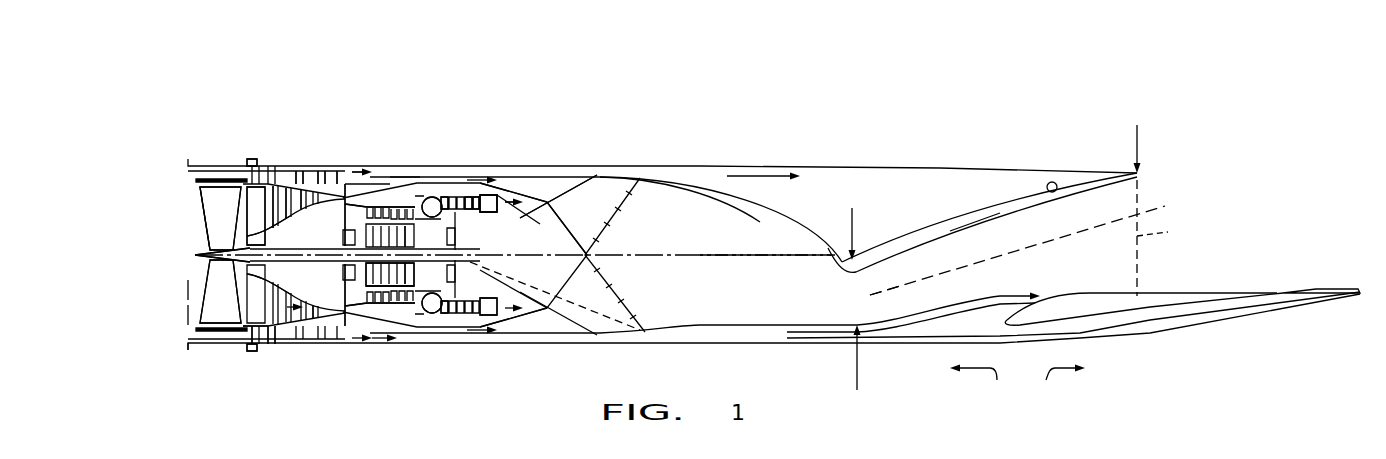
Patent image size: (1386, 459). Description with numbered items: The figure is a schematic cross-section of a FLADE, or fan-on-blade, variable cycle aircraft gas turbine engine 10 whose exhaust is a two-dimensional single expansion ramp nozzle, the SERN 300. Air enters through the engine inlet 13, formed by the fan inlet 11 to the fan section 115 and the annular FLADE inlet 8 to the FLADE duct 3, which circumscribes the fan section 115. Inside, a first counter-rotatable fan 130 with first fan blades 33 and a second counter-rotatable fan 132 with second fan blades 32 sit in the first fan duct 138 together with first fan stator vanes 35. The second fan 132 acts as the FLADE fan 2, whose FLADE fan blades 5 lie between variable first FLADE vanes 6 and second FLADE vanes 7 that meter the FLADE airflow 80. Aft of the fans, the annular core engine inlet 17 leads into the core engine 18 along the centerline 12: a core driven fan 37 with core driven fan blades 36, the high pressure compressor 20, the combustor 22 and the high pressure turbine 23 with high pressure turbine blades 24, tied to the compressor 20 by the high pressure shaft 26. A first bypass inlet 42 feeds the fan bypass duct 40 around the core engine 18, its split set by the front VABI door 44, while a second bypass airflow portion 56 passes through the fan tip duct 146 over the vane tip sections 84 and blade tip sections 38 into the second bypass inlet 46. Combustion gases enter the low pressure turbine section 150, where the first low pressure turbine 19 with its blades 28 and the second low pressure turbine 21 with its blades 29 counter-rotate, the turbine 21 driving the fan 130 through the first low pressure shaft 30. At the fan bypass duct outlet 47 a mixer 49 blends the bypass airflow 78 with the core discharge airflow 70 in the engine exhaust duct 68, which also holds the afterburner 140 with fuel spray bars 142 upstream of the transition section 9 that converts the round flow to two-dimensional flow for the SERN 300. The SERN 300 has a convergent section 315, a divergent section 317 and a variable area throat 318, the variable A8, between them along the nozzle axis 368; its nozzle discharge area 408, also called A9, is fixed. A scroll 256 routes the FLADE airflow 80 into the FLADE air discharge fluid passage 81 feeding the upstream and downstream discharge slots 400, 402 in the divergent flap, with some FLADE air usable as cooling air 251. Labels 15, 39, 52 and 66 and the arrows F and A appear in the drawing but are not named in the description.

The FLADE engine 10 is at (490, 90).
The FLADE fan 2 is at (267, 343).
The FLADE duct 3 is at (339, 171).
The FLADE fan blades 5 is at (267, 165).
The variable first FLADE vanes 6 is at (248, 163).
The variable second FLADE vanes 7 is at (290, 171).
The annular FLADE inlet 8 is at (191, 340).
The transition section 9 is at (721, 219).
The fan inlet 11 is at (193, 312).
The centerline 12 is at (632, 250).
The engine inlet 13 is at (188, 293).
The core exhaust flow 15 is at (489, 228).
The annular core engine inlet 17 is at (263, 312).
The core engine 18 is at (407, 322).
The first low pressure turbine 19 is at (478, 203).
The high pressure compressor 20 is at (364, 288).
The second low pressure turbine 21 is at (505, 197).
The combustor 22 is at (432, 316).
The high pressure turbine 23 is at (457, 318).
The high pressure turbine blades 24 is at (459, 190).
The high pressure shaft 26 is at (405, 245).
The first row of low pressure turbine blades 28 is at (462, 185).
The second row of low pressure turbine blades 29 is at (514, 185).
The first low pressure shaft 30 is at (483, 260).
The second fan blades 32 is at (251, 224).
The first fan blades 33 is at (227, 225).
The first fan stator vanes 35 is at (271, 327).
The core driven fan blades 36 is at (349, 288).
The core driven fan 37 is at (347, 322).
The blade tip sections 38 is at (345, 332).
The turbine blade 39 is at (404, 284).
The fan bypass duct 40 is at (407, 178).
The first bypass inlet 42 is at (256, 206).
The front variable area bypass injector door 44 is at (341, 322).
The second bypass inlet 46 is at (442, 177).
The fan bypass duct outlet 47 is at (547, 185).
The mixer 49 is at (597, 178).
The booster compressor 52 is at (301, 205).
The second bypass airflow portion 56 is at (308, 212).
The turbine casing 66 is at (466, 185).
The engine exhaust duct 68 is at (574, 228).
The core discharge airflow 70 is at (535, 189).
The bypass airflow 78 is at (470, 180).
The FLADE airflow 80 is at (354, 172).
The FLADE air discharge fluid passage 81 is at (742, 336).
The vane tip sections 84 is at (324, 290).
The fan section 115 is at (232, 364).
The first counter-rotatable fan 130 is at (228, 260).
The second counter-rotatable fan 132 is at (265, 230).
The first fan duct 138 is at (241, 340).
The augmentor or afterburner 140 is at (615, 311).
The fuel spray bars 142 is at (620, 288).
The fan tip duct 146 is at (345, 175).
The low pressure turbine section 150 is at (489, 336).
The cooling air 251 is at (778, 176).
The scroll 256 is at (395, 170).
The SERN 300 is at (1013, 156).
The convergent section 315 is at (767, 270).
The divergent section 317 is at (975, 234).
The variable area throat 318 is at (871, 294).
The nozzle axis 368 is at (1161, 209).
The upstream discharge slot 400 is at (1048, 299).
The downstream discharge slot 402 is at (1283, 292).
The nozzle discharge area 408 is at (1168, 232).
The variable throat area A8 is at (853, 212).
The nozzle exit area A9 is at (1140, 143).
The forward direction F is at (978, 383).
The aft direction A is at (1061, 383).